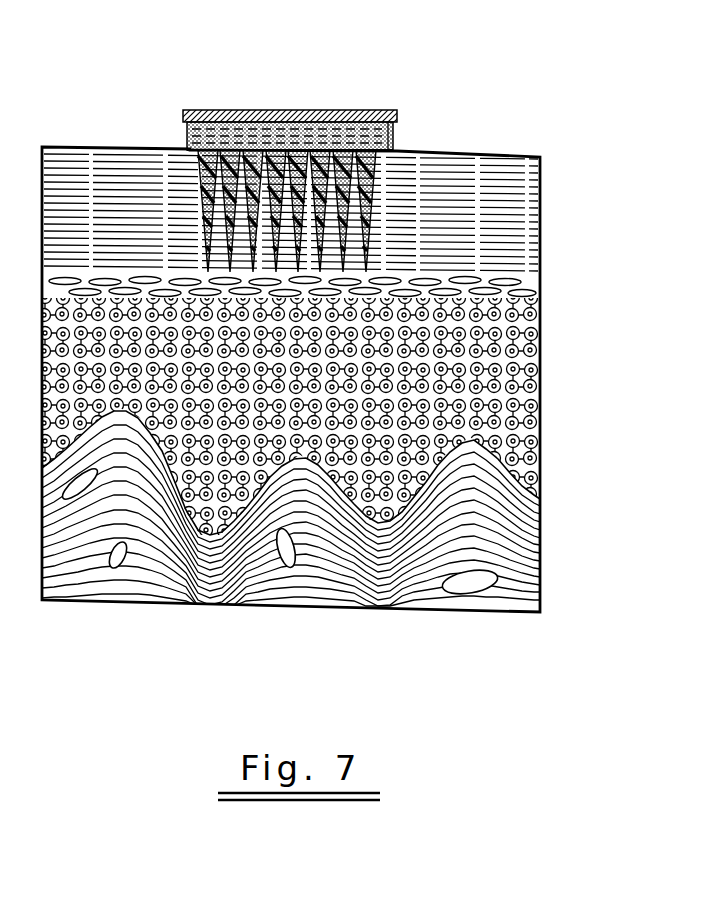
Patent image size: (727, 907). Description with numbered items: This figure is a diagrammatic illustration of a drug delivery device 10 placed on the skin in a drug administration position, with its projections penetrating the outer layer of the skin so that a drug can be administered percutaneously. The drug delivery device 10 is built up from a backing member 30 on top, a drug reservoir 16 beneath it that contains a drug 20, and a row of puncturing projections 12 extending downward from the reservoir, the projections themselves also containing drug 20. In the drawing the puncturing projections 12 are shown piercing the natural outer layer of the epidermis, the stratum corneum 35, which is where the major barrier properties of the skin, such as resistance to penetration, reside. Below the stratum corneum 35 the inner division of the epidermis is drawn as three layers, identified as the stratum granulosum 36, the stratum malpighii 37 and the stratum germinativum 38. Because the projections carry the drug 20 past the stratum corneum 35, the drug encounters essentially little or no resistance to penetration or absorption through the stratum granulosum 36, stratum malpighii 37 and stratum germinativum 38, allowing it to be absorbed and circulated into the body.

The drug delivery device 10 is at (313, 147).
The puncturing projections 12 is at (220, 217).
The drug reservoir 16 is at (393, 143).
The drug 20 is at (273, 138).
The backing member 30 is at (397, 117).
The stratum corneum 35 is at (560, 160).
The stratum granulosum 36 is at (560, 287).
The stratum malpighii 37 is at (560, 312).
The stratum germinativum 38 is at (560, 494).